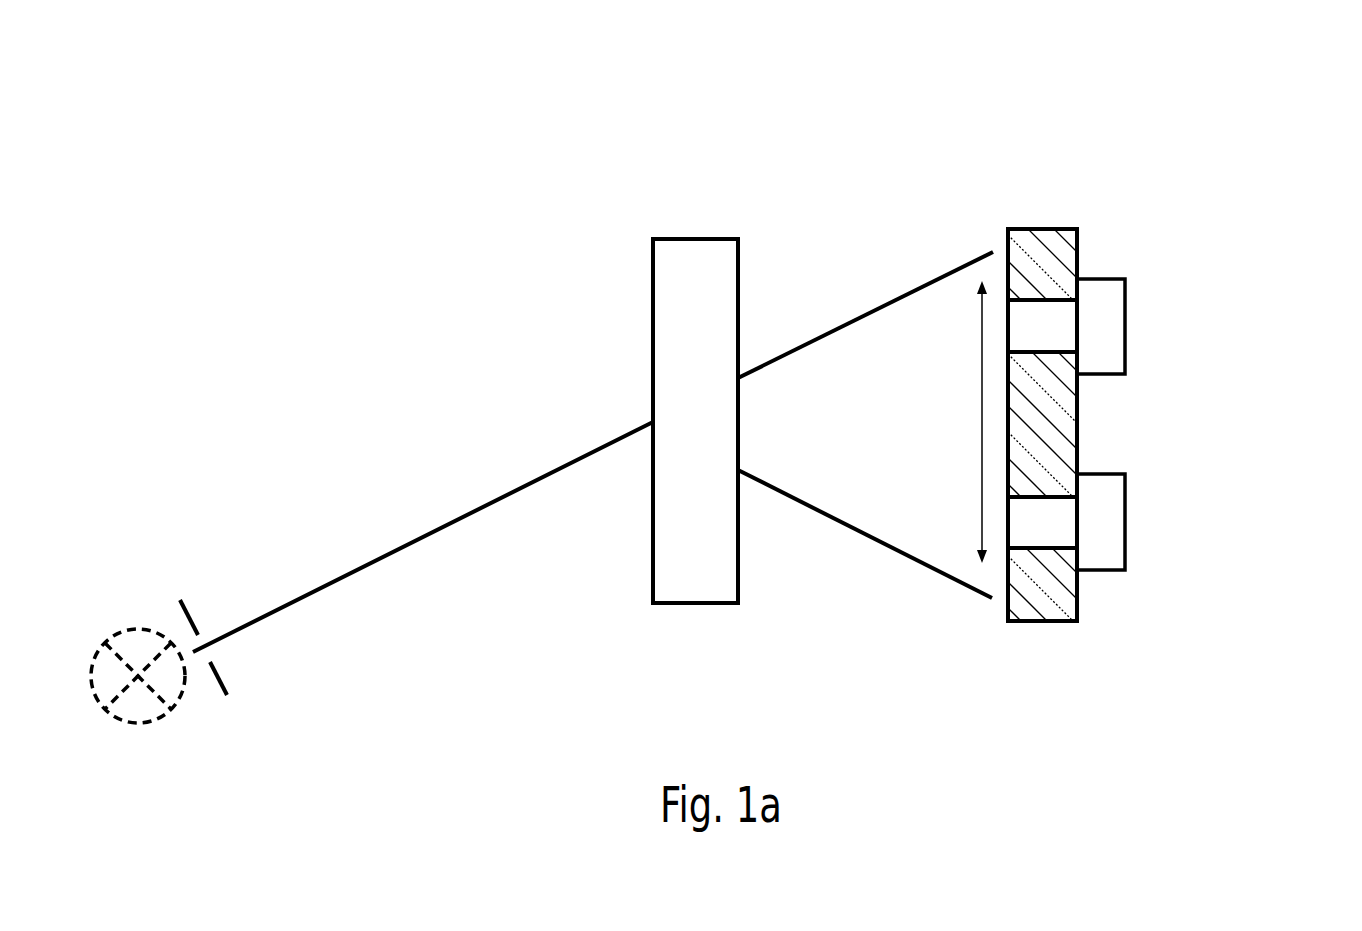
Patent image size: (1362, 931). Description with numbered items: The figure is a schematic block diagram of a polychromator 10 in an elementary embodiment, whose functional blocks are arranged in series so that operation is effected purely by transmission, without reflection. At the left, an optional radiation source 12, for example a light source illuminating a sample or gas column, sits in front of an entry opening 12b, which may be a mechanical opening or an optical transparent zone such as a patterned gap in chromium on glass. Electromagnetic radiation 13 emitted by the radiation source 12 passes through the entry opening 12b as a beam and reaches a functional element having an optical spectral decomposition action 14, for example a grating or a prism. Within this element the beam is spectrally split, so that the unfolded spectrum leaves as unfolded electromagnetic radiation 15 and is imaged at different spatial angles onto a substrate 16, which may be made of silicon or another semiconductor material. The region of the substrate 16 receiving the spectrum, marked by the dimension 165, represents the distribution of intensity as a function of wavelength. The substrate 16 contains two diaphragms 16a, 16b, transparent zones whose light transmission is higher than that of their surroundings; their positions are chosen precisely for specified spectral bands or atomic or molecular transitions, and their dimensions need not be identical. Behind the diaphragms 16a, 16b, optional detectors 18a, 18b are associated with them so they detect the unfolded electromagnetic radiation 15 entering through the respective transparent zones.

The polychromator 10 is at (1345, 94).
The radiation source 12 is at (140, 629).
The entry opening 12b is at (228, 688).
The electromagnetic radiation 13 is at (470, 510).
The functional element having an optical spectral decomposition action 14 is at (697, 238).
The unfolded electromagnetic radiation 15 is at (862, 345).
The substrate 16 is at (1043, 228).
The first area of the substrate 165 is at (968, 422).
The diaphragm 16a is at (1058, 322).
The diaphragm 16b is at (1058, 512).
The detector 18a is at (1105, 345).
The detector 18b is at (1105, 535).